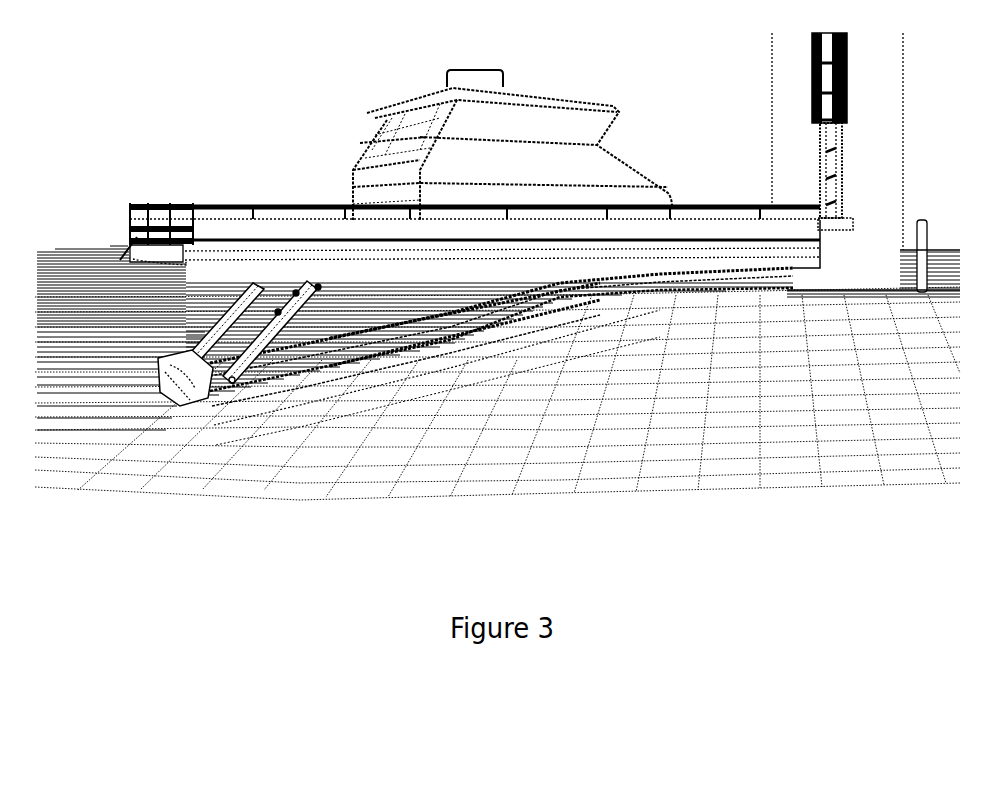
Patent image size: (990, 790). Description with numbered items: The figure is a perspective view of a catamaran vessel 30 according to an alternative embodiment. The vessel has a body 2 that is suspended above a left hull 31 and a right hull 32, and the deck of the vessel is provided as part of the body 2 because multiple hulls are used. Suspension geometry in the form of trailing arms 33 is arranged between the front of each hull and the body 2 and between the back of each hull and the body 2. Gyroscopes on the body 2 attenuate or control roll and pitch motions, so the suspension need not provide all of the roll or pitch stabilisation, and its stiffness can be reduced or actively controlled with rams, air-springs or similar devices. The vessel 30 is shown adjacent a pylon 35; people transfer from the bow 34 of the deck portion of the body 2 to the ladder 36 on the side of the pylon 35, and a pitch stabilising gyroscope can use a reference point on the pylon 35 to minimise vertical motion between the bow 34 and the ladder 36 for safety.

The body 2 is at (357, 200).
The catamaran vessel 30 is at (325, 86).
The left hull 31 is at (170, 383).
The right hull 32 is at (335, 403).
The trailing arms 33 is at (262, 350).
The bow 34 is at (823, 220).
The pylon 35 is at (888, 133).
The ladder 36 is at (843, 75).